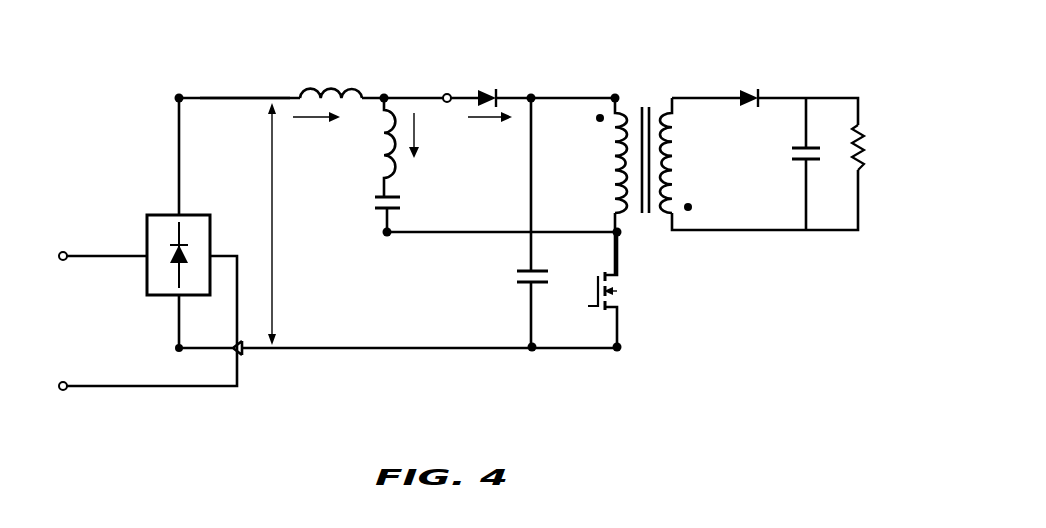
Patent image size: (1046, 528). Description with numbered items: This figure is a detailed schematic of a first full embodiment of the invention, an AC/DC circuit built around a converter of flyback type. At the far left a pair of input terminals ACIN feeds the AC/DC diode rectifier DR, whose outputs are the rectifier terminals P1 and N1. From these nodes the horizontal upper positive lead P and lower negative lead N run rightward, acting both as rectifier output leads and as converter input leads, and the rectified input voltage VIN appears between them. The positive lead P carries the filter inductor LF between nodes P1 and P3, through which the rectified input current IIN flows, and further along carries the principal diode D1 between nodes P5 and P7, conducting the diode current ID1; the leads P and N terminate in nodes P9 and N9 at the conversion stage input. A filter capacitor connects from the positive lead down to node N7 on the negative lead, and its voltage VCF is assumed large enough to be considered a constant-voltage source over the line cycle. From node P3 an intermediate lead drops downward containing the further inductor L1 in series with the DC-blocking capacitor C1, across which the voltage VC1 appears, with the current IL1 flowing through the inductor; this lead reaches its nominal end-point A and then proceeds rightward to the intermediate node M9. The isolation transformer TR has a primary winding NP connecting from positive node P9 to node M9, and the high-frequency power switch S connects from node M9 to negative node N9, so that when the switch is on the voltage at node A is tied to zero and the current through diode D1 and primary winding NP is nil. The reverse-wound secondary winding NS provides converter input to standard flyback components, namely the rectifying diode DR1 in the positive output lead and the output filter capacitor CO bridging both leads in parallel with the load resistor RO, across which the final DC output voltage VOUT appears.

The rectifier positive output terminal node P1 is at (179, 97).
The positive lead P is at (236, 97).
The node P3 is at (384, 97).
The node P5 is at (447, 94).
The node P7 is at (531, 97).
The positive node P9 is at (615, 97).
The rectifier negative output terminal node N1 is at (179, 348).
The negative lead N is at (362, 348).
The node N7 is at (533, 350).
The negative node N9 is at (618, 350).
The intermediate node M9 is at (621, 232).
The nominal end-point A is at (388, 236).
The AC/DC diode rectifier DR is at (175, 240).
The input terminals ACIN is at (127, 321).
The rectified input voltage VIN is at (273, 224).
The filter inductor LF is at (331, 78).
The rectified input current IIN is at (316, 134).
The intermediate lead inductor current IL1 is at (429, 135).
The positive lead diode current ID1 is at (490, 134).
The intermediate lead inductor L1 is at (376, 147).
The DC-blocking capacitor C1 is at (376, 204).
The voltage across DC-blocking capacitor VC1 is at (423, 203).
The principal diode D1 is at (487, 80).
The filter capacitor voltage VCF is at (519, 285).
The isolation transformer TR is at (645, 143).
The primary winding NP is at (600, 155).
The secondary winding NS is at (683, 155).
The rectifying diode DR1 is at (755, 81).
The output filter capacitor CO is at (794, 160).
The load resistor RO is at (856, 158).
The DC output voltage VOUT is at (889, 150).
The high-frequency power switch S is at (615, 289).